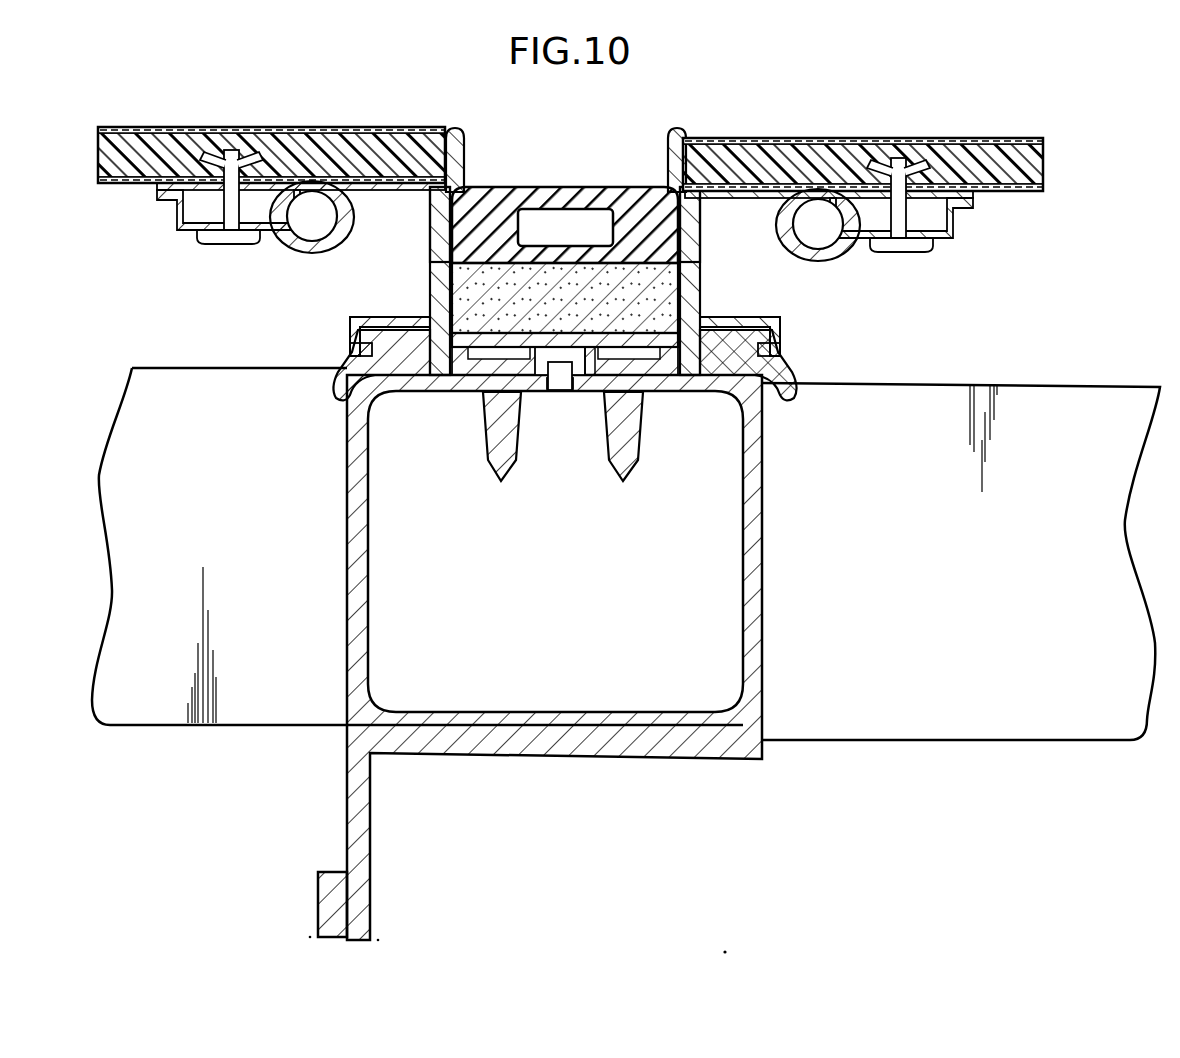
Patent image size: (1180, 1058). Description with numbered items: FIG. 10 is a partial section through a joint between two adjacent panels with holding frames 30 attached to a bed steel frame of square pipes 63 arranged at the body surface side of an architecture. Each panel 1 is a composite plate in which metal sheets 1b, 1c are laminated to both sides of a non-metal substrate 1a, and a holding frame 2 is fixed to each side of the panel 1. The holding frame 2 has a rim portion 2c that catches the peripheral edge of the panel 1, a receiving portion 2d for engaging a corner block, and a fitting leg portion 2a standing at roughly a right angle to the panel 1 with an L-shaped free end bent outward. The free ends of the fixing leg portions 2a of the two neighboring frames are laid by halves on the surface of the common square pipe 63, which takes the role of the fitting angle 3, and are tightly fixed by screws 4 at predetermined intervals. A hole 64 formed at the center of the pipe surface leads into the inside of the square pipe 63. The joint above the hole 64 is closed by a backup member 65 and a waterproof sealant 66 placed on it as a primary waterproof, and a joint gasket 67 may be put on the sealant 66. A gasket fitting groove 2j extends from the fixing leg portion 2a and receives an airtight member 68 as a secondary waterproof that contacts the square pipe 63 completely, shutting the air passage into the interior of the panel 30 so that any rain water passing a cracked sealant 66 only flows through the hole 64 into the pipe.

The panel 1 is at (882, 142).
The substrate 1a is at (105, 150).
The metal sheet 1b is at (135, 127).
The metal sheet 1c is at (122, 185).
The holding frame 2 is at (429, 283).
The fitting leg portion 2a is at (430, 222).
The rim portion 2c is at (465, 150).
The receiving portion 2d is at (300, 240).
The gasket fitting groove 2j is at (357, 318).
The angle 3 is at (622, 758).
The screw 4 is at (483, 433).
The panel with holding frames 30 is at (306, 121).
The square pipe 63 is at (348, 557).
The hole 64 is at (560, 392).
The plate 65 is at (530, 375).
The waterproof sealant 66 is at (586, 350).
The joint gasket 67 is at (588, 187).
The airtight member 68 is at (350, 345).